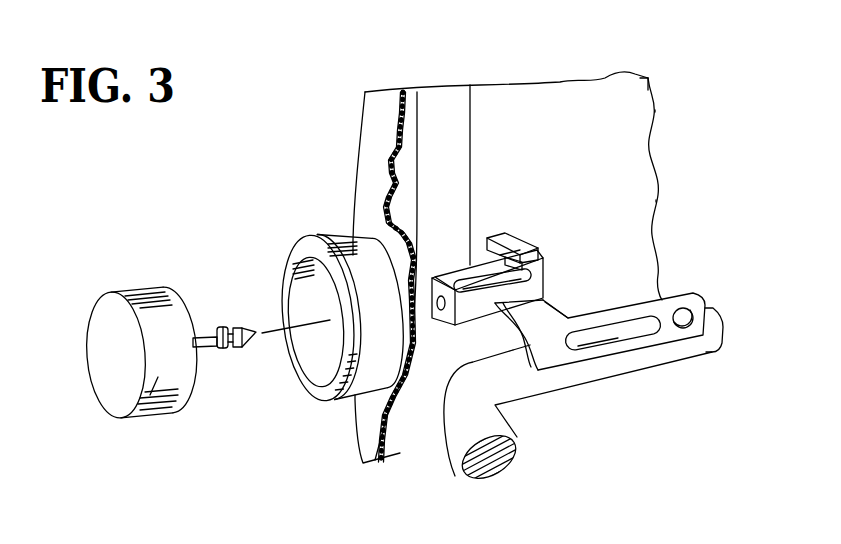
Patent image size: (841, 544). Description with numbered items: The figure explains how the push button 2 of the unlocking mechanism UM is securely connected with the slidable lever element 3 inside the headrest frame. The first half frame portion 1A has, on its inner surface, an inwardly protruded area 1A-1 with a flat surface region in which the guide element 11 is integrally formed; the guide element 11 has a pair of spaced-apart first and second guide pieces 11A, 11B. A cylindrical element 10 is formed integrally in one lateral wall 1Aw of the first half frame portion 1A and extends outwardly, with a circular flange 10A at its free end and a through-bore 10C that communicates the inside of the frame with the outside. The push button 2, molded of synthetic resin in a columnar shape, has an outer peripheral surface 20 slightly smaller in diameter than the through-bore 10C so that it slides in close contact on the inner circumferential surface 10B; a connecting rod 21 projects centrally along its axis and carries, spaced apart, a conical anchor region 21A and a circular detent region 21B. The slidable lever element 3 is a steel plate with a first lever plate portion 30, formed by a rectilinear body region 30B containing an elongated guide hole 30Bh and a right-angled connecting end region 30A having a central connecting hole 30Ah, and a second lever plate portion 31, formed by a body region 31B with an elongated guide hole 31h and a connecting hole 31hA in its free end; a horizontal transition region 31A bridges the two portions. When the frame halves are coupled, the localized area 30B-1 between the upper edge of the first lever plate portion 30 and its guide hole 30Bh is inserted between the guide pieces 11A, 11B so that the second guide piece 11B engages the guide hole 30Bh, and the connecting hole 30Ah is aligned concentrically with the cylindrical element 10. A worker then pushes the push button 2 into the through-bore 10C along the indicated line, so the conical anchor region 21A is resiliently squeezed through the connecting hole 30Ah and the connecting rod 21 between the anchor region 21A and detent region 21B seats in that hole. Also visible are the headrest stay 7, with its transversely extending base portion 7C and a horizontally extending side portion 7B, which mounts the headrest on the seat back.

The first half frame portion 1A is at (356, 110).
The lateral wall 1Aw is at (378, 138).
The inwardly protruded area 1A-1 is at (631, 115).
The unlocking mechanism UM is at (718, 108).
The slidable lever element 3 is at (690, 192).
The push button 2 is at (133, 297).
The outer peripheral surface 20 is at (158, 377).
The connecting rod 21 is at (210, 336).
The conical anchor region 21A is at (248, 348).
The circular detent region 21B is at (227, 349).
The cylindrical element 10 is at (315, 291).
The circular flange 10A is at (288, 250).
The inner circumferential surface 10B is at (305, 290).
The through-bore 10C is at (300, 316).
The first lever plate portion 30 is at (446, 302).
The right-angled connecting end region 30A is at (440, 325).
The connecting hole 30Ah is at (438, 307).
The body region 30B is at (493, 312).
The elongated guide hole 30Bh is at (480, 287).
The localized area 30B-1 is at (505, 257).
The guide element 11 is at (558, 213).
The first guide piece 11A is at (525, 247).
The second guide piece 11B is at (553, 252).
The headrest stay 7 is at (718, 290).
The side portion 7B is at (456, 436).
The base portion 7C is at (523, 397).
The second lever plate portion 31 is at (644, 301).
The transition region 31A is at (648, 277).
The body region 31B is at (583, 365).
The elongated guide hole 31h is at (627, 338).
The connecting hole 31hA is at (690, 328).